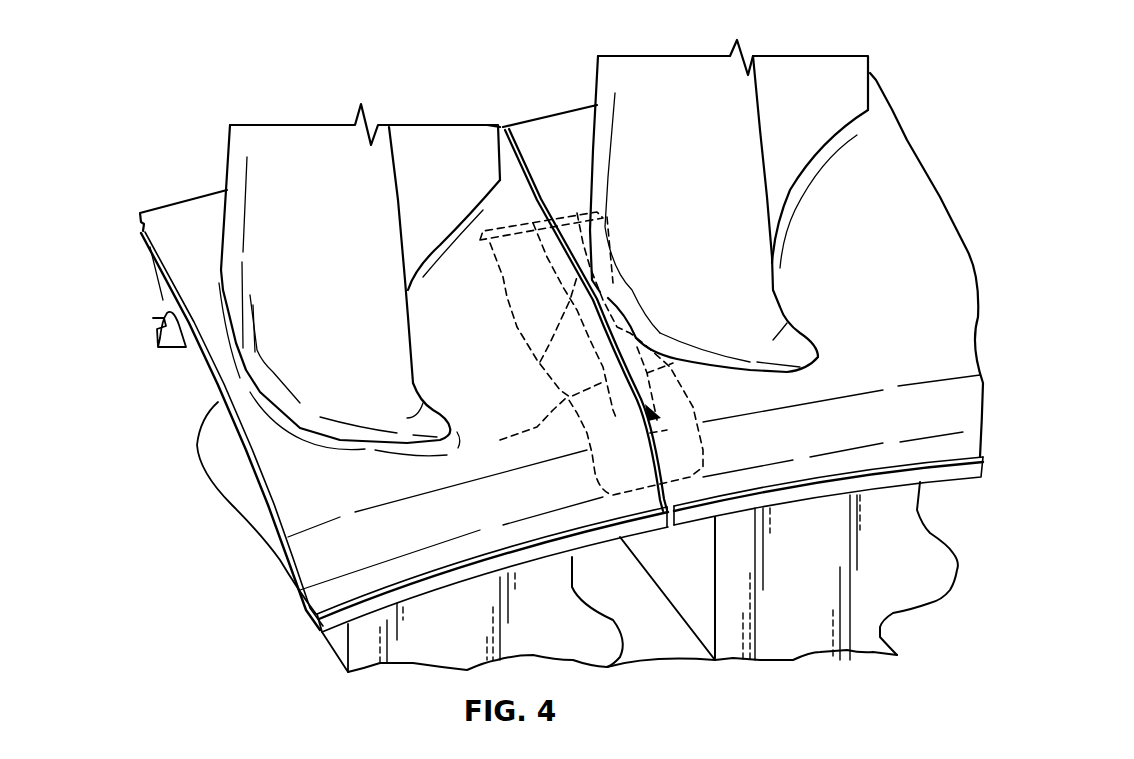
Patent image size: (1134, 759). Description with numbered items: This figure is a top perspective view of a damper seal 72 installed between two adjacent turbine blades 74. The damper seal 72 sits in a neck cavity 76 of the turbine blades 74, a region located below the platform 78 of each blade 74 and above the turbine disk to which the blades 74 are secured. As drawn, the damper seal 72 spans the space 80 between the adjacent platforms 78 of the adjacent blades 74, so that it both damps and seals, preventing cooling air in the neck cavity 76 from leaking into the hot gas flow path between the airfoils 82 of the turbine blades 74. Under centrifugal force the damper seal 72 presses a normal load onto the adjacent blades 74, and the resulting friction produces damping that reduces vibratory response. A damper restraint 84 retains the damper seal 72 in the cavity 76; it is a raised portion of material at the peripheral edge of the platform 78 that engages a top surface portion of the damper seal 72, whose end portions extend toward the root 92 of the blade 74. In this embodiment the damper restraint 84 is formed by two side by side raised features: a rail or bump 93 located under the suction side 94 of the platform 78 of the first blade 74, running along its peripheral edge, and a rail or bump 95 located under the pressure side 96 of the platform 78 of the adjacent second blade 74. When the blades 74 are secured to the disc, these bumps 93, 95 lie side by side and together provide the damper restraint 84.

The damper seal 72 is at (548, 316).
The turbine blade 74 is at (136, 199).
The neck cavity 76 is at (180, 385).
The platform 78 is at (288, 462).
The space 80 is at (512, 137).
The airfoil 82 is at (260, 212).
The damper restraint 84 is at (708, 455).
The root 92 is at (446, 603).
The raised feature 93 is at (514, 426).
The suction side 94 is at (203, 288).
The raised feature 95 is at (675, 358).
The pressure side 96 is at (488, 370).